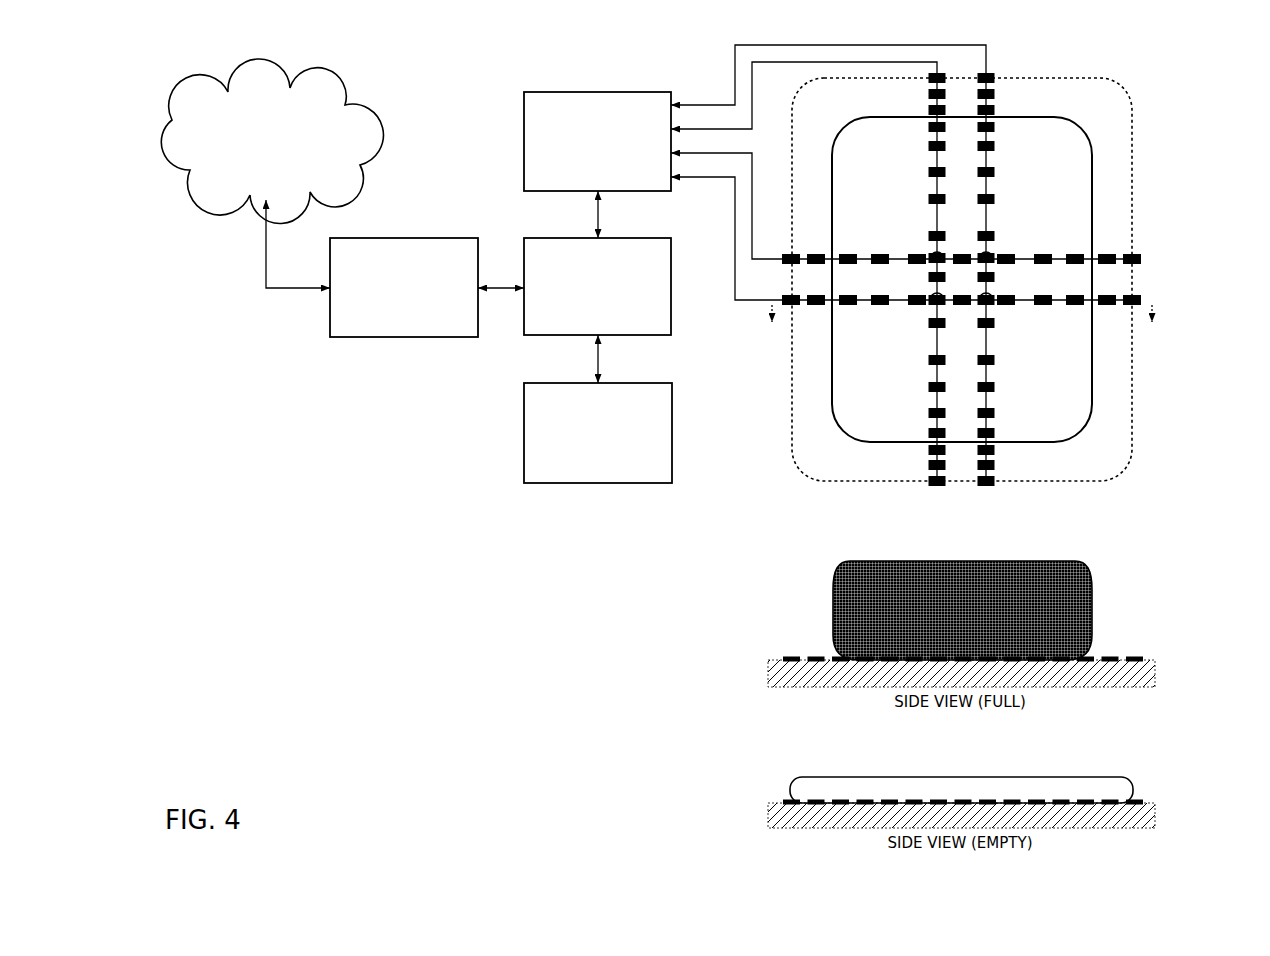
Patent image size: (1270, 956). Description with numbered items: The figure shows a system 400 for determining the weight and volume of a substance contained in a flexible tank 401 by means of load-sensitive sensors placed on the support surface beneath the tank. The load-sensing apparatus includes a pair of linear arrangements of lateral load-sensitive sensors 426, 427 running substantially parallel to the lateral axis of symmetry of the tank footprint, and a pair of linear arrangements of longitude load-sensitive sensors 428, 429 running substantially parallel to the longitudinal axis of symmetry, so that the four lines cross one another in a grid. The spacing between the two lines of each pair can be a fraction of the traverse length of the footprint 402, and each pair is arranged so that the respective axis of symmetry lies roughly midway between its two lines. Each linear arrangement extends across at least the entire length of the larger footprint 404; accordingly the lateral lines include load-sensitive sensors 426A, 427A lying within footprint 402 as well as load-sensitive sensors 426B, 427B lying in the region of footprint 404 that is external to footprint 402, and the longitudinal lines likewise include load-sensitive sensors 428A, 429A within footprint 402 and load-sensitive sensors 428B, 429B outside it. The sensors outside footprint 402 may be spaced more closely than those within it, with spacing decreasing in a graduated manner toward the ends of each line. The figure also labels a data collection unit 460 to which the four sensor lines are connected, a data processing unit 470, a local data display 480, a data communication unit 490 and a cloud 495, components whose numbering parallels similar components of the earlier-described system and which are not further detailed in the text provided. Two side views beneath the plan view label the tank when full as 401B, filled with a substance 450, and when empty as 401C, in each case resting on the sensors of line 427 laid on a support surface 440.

The system 400 is at (1200, 87).
The flexible tank 401 is at (1011, 279).
The full bladder 401B is at (989, 607).
The empty bladder 401C is at (941, 798).
The footprint 402 is at (1092, 150).
The footprint 404 is at (1133, 410).
The linear arrangement of lateral load-sensitive sensors 426 is at (1140, 259).
The load-sensitive sensors 426A is at (915, 248).
The load-sensitive sensors 426B is at (1125, 245).
The linear arrangement of lateral load-sensitive sensors 427 is at (1140, 300).
The load-sensitive sensors 427A is at (915, 310).
The load-sensitive sensors 427B is at (1125, 313).
The linear arrangement of longitude load-sensitive sensors 428 is at (937, 486).
The load-sensitive sensors 428A is at (922, 125).
The load-sensitive sensors 428B is at (918, 86).
The linear arrangement of longitude load-sensitive sensors 429 is at (986, 486).
The load-sensitive sensors 429A is at (1001, 125).
The load-sensitive sensors 429B is at (1004, 86).
The substrate 440 is at (770, 676).
The bladder contents 450 is at (1068, 594).
The data collection unit 460 is at (597, 165).
The data processing unit 470 is at (597, 310).
The local data display 480 is at (598, 433).
The data communication unit 490 is at (427, 287).
The cloud 495 is at (272, 173).